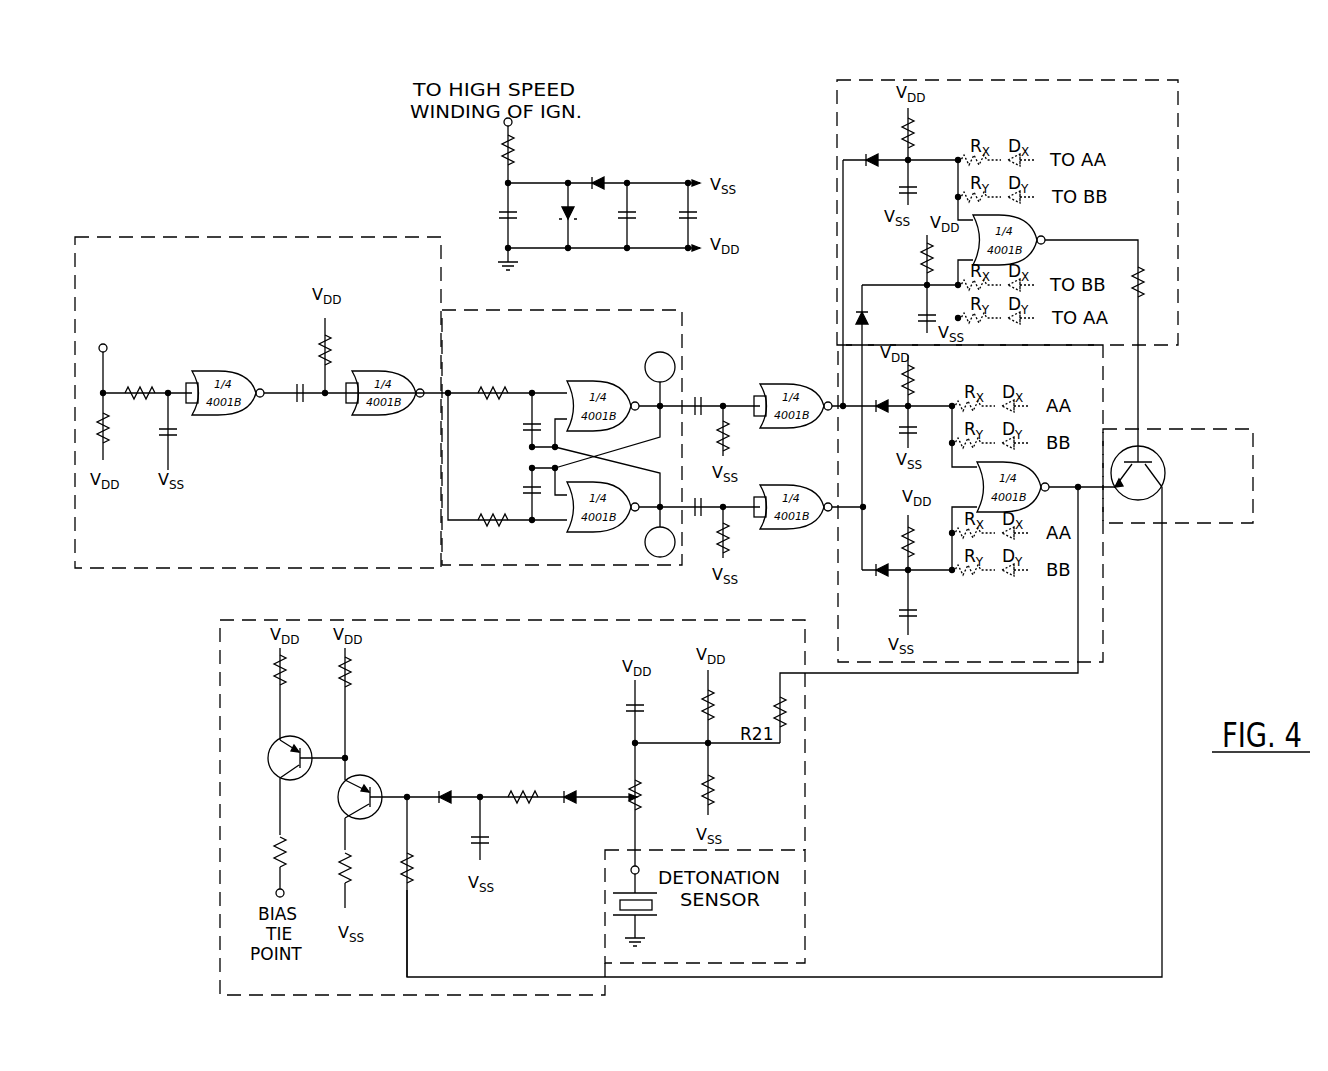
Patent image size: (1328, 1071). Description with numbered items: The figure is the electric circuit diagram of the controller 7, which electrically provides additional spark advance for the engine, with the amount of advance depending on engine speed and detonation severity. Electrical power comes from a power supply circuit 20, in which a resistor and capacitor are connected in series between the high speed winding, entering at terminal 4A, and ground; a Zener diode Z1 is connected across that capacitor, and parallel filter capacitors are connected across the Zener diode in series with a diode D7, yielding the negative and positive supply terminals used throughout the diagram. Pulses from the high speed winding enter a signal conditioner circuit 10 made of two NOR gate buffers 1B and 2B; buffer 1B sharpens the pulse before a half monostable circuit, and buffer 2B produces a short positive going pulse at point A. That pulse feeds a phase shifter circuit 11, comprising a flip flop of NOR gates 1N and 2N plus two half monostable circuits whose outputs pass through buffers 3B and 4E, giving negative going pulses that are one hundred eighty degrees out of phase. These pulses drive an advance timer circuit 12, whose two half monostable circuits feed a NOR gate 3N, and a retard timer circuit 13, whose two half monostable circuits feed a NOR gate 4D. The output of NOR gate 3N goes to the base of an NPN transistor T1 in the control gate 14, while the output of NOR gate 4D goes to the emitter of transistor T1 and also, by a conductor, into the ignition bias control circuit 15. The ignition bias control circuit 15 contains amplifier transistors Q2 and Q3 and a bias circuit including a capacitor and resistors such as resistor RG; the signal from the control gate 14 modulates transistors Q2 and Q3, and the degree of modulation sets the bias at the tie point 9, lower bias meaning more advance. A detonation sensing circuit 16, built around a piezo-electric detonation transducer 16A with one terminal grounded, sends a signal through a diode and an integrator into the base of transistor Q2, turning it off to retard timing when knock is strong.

The controller 7 is at (322, 168).
The signal conditioner circuit 10 is at (260, 235).
The phase shifter circuit 11 is at (690, 323).
The advance timer circuit 12 is at (1187, 174).
The retard timer circuit 13 is at (1105, 627).
The control gate 14 is at (1258, 437).
The ignition bias control circuit 15 is at (218, 626).
The detonation sensing circuit 16 is at (808, 912).
The detonation transducer 16A is at (654, 910).
The power supply circuit 20 is at (628, 158).
The tie point 9 is at (284, 890).
The terminal to high speed winding of ignition 4A is at (107, 345).
The NPN transistor T1 is at (1160, 468).
The amplifier transistor Q2 is at (368, 781).
The amplifier transistor Q3 is at (304, 742).
The buffer 1B is at (228, 374).
The buffer 2B is at (386, 370).
The NOR gate 1N is at (592, 388).
The NOR gate 2N is at (576, 494).
The buffer 3B is at (788, 383).
The NOR gate 4E is at (794, 486).
The NOR gate 3N is at (1020, 228).
The NOR gate 4D is at (1024, 474).
The resistor RG is at (649, 804).
The Zener diode Z1 is at (579, 215).
The diode D7 is at (597, 172).